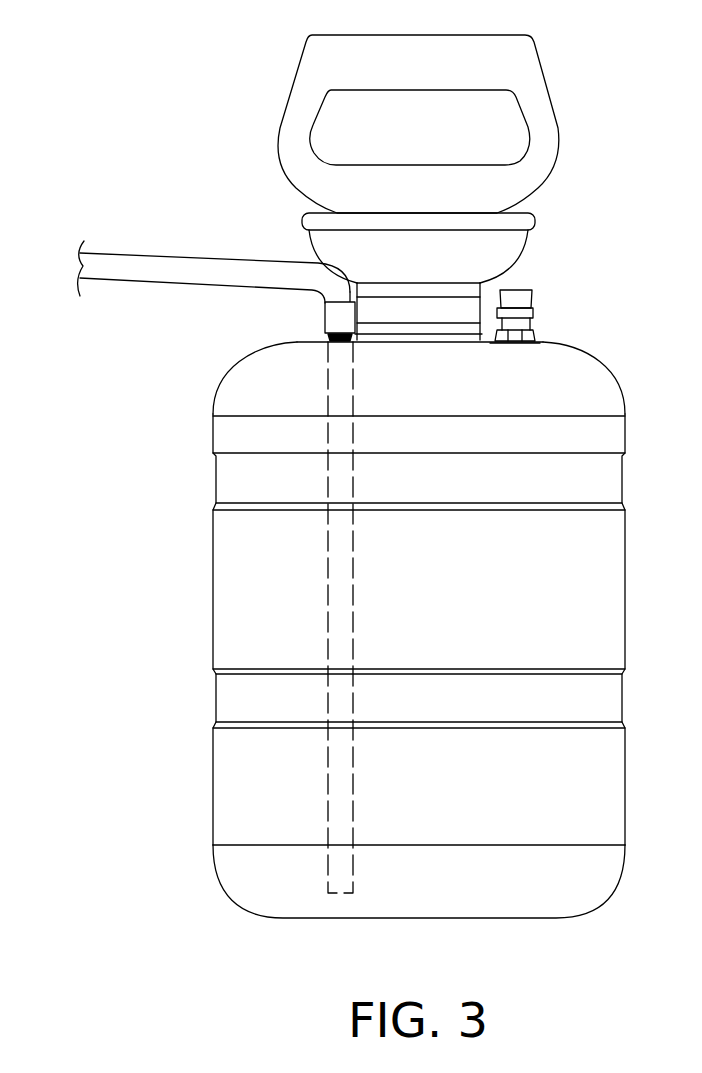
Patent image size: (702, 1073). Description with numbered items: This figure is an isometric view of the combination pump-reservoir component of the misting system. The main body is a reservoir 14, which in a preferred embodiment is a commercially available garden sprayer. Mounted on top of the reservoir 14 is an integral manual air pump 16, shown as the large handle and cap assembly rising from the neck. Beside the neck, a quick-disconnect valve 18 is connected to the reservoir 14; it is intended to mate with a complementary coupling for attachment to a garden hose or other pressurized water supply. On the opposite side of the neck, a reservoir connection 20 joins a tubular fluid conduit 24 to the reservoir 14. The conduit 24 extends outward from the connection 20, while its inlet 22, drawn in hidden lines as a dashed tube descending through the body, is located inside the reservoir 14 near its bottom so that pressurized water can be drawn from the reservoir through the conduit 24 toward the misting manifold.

The reservoir 14 is at (612, 598).
The manual air pump 16 is at (530, 80).
The quick-disconnect valve 18 is at (533, 303).
The reservoir connection 20 is at (300, 340).
The inlet 22 is at (330, 605).
The tubular fluid conduit 24 is at (148, 286).